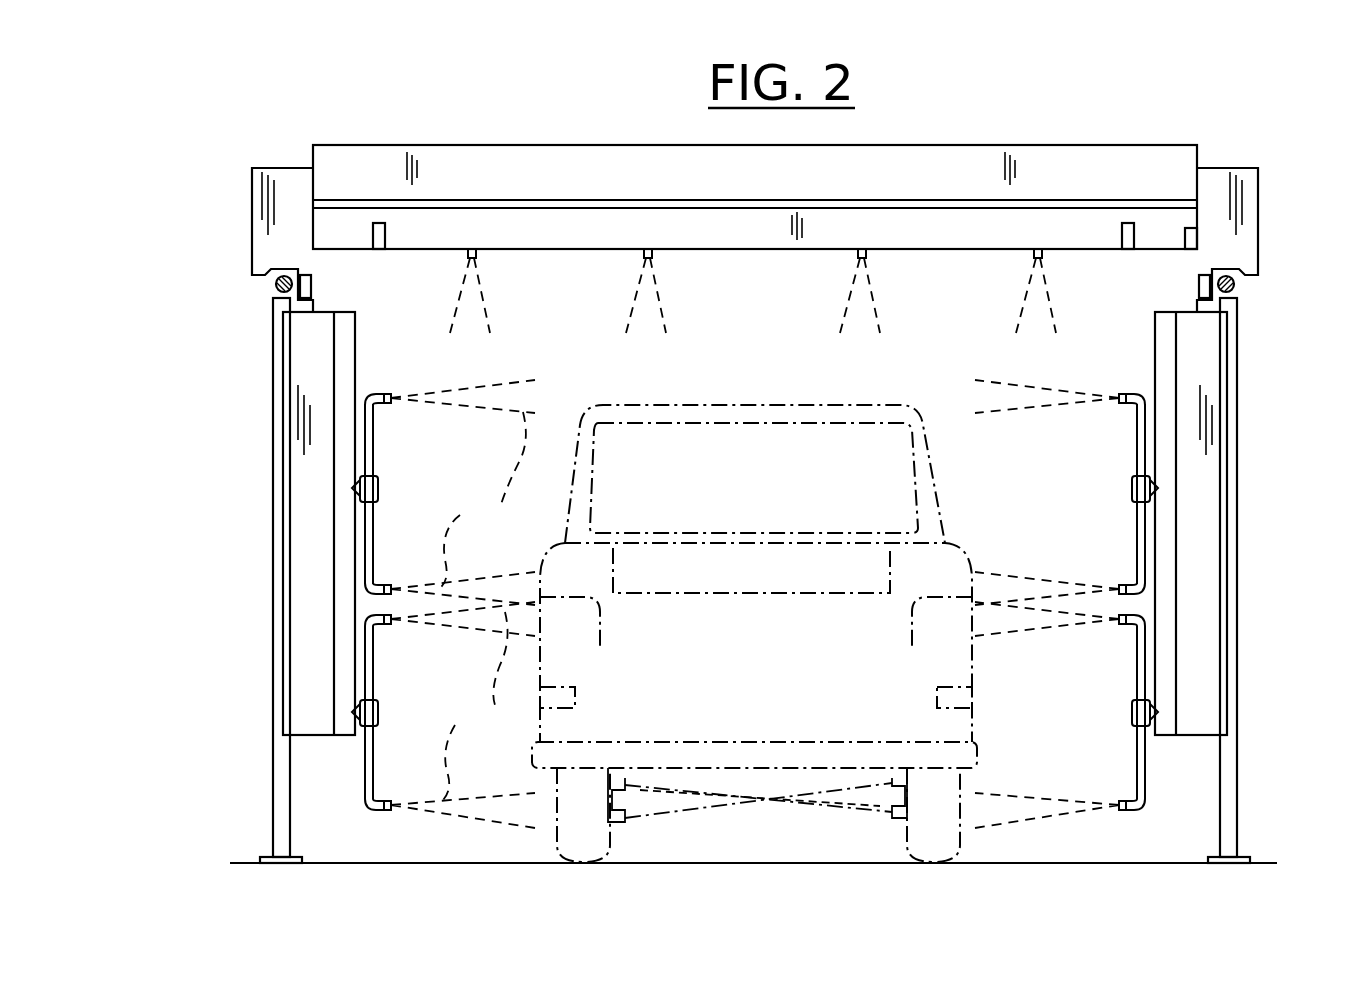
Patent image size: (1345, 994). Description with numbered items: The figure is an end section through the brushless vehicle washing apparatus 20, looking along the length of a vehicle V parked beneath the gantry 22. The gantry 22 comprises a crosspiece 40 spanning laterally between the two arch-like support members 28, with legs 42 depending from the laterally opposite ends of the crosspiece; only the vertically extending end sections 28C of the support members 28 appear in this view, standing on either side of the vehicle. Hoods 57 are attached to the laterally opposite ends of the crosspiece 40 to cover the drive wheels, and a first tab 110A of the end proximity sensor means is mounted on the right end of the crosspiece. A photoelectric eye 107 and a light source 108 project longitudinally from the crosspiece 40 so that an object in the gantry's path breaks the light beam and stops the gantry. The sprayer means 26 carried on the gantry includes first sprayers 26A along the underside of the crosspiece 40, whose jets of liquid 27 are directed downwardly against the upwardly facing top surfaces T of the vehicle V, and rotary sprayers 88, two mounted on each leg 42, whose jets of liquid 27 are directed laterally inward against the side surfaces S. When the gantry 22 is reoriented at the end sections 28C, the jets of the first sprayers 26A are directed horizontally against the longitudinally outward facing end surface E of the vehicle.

The brushless vehicle washing apparatus 20 is at (243, 100).
The gantry 22 is at (362, 130).
The crosspiece 40 is at (998, 145).
The hoods 57 is at (290, 168).
The photoelectric eyes 107 is at (388, 240).
The light sources 108 is at (1120, 227).
The first tab 110A is at (1190, 228).
The first sprayers 26A is at (478, 258).
The sprayer means 26 is at (622, 298).
The rotary sprayers 88 is at (390, 482).
The jets of liquid 27 is at (483, 606).
The legs 42 is at (283, 517).
The end section 28C is at (283, 549).
The support members 28 is at (273, 742).
The vehicle V is at (738, 385).
The top surfaces T is at (782, 410).
The side surfaces S is at (540, 583).
The end surface E is at (795, 745).